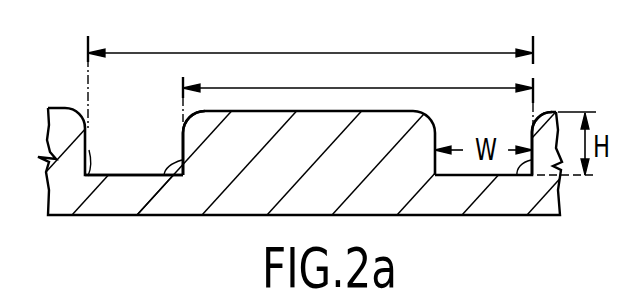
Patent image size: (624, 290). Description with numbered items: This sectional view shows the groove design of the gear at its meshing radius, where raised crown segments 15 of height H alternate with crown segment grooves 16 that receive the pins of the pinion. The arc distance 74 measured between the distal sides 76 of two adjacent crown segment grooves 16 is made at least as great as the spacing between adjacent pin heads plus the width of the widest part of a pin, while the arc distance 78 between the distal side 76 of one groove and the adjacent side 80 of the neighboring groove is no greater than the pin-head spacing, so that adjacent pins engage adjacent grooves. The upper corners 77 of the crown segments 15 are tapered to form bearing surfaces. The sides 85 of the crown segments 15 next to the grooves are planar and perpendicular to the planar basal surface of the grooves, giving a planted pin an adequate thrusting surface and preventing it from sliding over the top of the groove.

The crown segment 15 is at (277, 111).
The crown segment groove 16 is at (116, 158).
The arc distance 74 is at (375, 53).
The distal side 76 is at (88, 176).
The upper corner 77 is at (543, 117).
The arc distance 78 is at (395, 88).
The adjacent side 80 is at (182, 137).
The side 85 is at (164, 175).